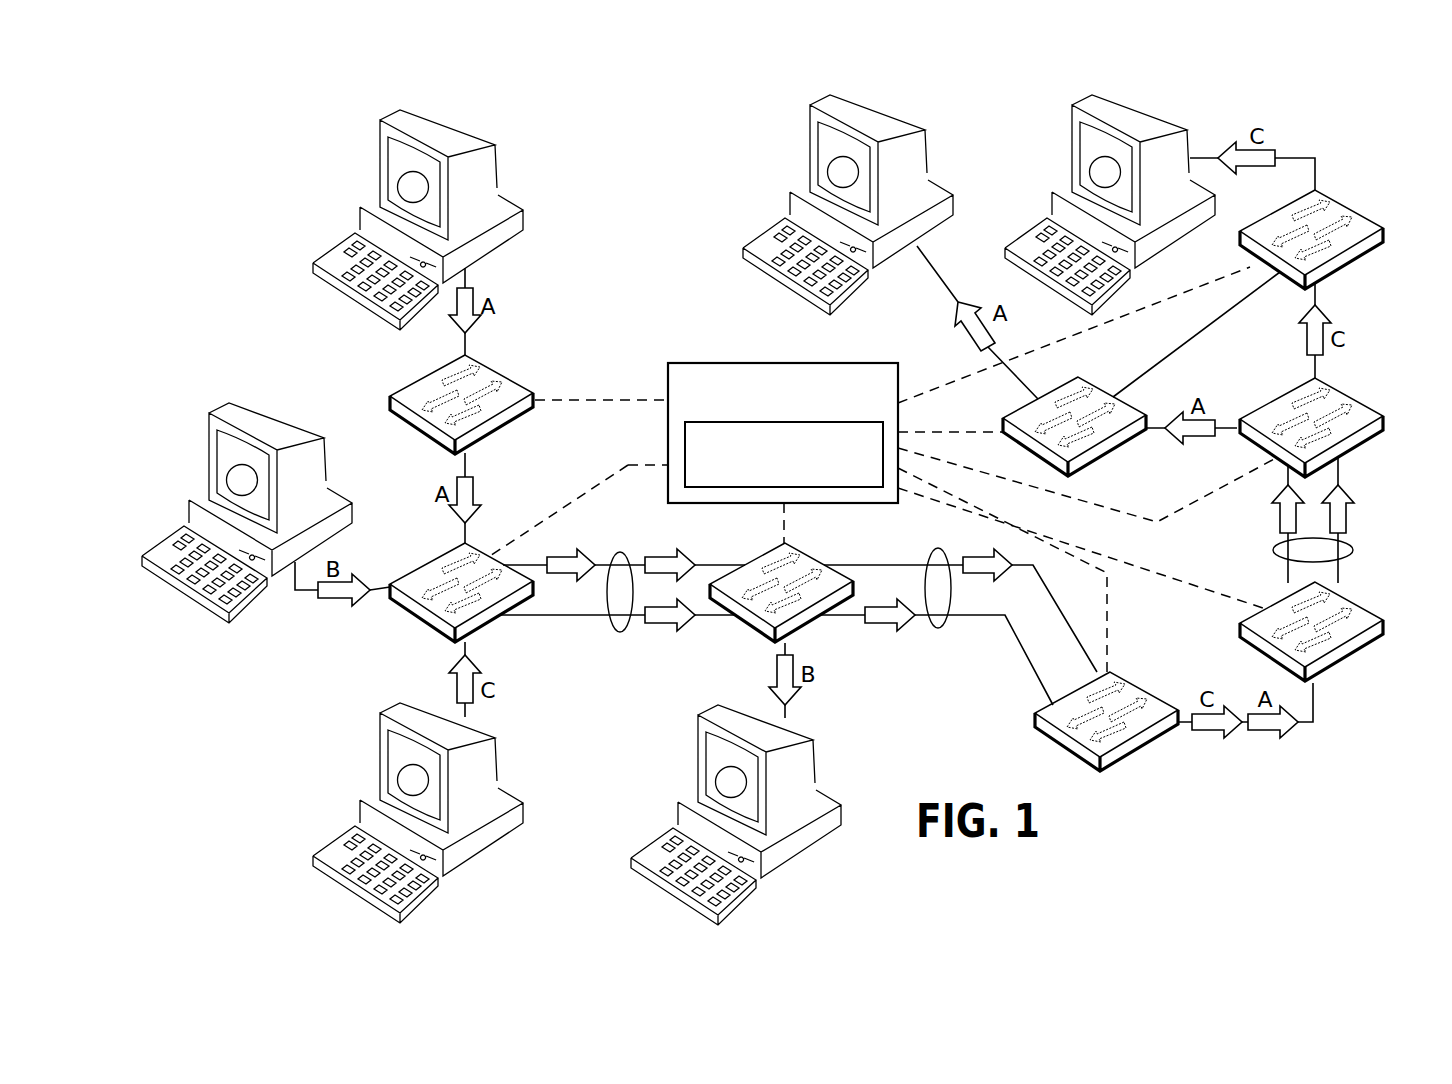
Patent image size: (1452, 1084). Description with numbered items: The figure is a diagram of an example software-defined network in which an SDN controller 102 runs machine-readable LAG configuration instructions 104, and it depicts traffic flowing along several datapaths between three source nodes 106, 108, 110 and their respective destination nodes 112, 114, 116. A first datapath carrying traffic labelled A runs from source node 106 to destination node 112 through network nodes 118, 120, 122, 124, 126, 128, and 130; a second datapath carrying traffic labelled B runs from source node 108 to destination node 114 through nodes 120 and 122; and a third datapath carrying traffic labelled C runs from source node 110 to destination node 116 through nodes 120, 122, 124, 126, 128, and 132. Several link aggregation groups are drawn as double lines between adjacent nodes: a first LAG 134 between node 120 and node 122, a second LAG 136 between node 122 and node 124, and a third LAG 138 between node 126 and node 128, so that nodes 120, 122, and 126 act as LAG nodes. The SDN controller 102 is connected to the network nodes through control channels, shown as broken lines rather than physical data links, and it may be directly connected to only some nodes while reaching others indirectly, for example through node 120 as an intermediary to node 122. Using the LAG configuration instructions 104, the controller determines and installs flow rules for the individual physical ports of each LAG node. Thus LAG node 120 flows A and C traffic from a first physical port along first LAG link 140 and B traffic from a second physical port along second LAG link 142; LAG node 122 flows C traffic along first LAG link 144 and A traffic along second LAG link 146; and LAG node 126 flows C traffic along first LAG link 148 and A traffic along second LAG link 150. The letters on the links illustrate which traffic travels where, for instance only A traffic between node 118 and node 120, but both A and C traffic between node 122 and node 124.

The SDN controller 102 is at (783, 425).
The LAG configuration instructions 104 is at (723, 488).
The source node 106 is at (380, 161).
The source node 108 is at (300, 427).
The source node 110 is at (380, 758).
The destination node 112 is at (810, 146).
The destination node 114 is at (698, 760).
The destination node 116 is at (1072, 146).
The network node 118 is at (430, 376).
The LAG node 120 is at (413, 568).
The LAG node 122 is at (743, 625).
The network node 124 is at (1150, 693).
The LAG node 126 is at (1343, 665).
The network node 128 is at (1363, 407).
The network node 130 is at (1093, 463).
The network node 132 is at (1358, 214).
The first LAG 134 is at (620, 552).
The second LAG 136 is at (940, 630).
The third LAG 138 is at (1353, 550).
The first LAG link 140 is at (528, 560).
The second LAG link 142 is at (573, 618).
The first LAG link 144 is at (895, 563).
The second LAG link 146 is at (1017, 640).
The first LAG link 148 is at (1288, 577).
The second LAG link 150 is at (1340, 578).